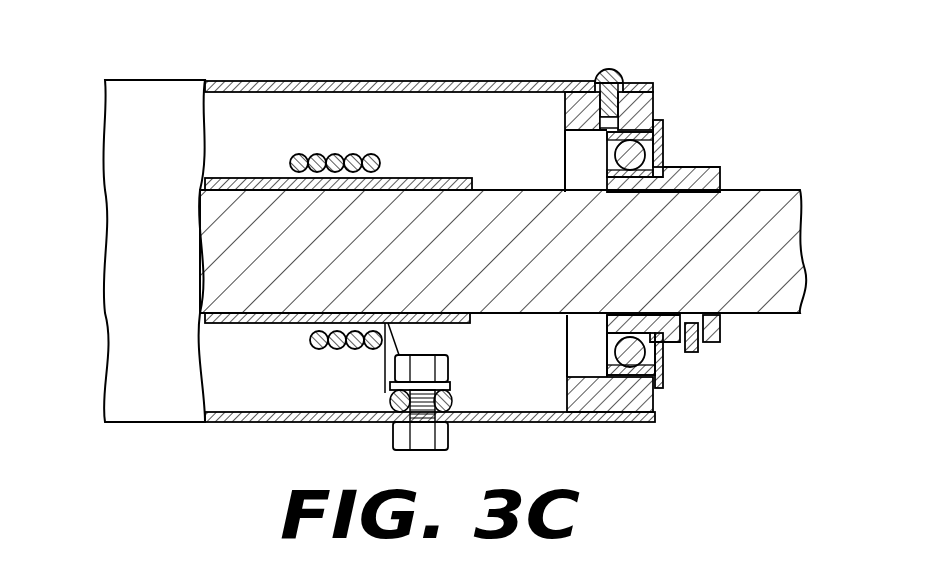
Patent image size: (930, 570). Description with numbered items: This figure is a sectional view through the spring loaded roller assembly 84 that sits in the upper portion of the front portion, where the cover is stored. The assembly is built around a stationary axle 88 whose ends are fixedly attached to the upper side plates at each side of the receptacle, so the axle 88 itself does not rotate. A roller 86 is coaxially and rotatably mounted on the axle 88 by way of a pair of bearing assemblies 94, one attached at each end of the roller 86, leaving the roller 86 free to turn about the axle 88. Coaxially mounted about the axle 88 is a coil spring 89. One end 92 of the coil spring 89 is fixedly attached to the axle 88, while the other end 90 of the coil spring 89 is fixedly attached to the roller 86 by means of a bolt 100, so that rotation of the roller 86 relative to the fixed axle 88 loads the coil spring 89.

The spring loaded roller assembly 84 is at (226, 60).
The roller 86 is at (405, 82).
The axle 88 is at (745, 192).
The coil spring 89 is at (327, 140).
The other end of the coil spring 90 is at (388, 398).
The one end of the coil spring 92 is at (290, 165).
The bearing assemblies 94 is at (668, 148).
The bolt 100 is at (450, 440).